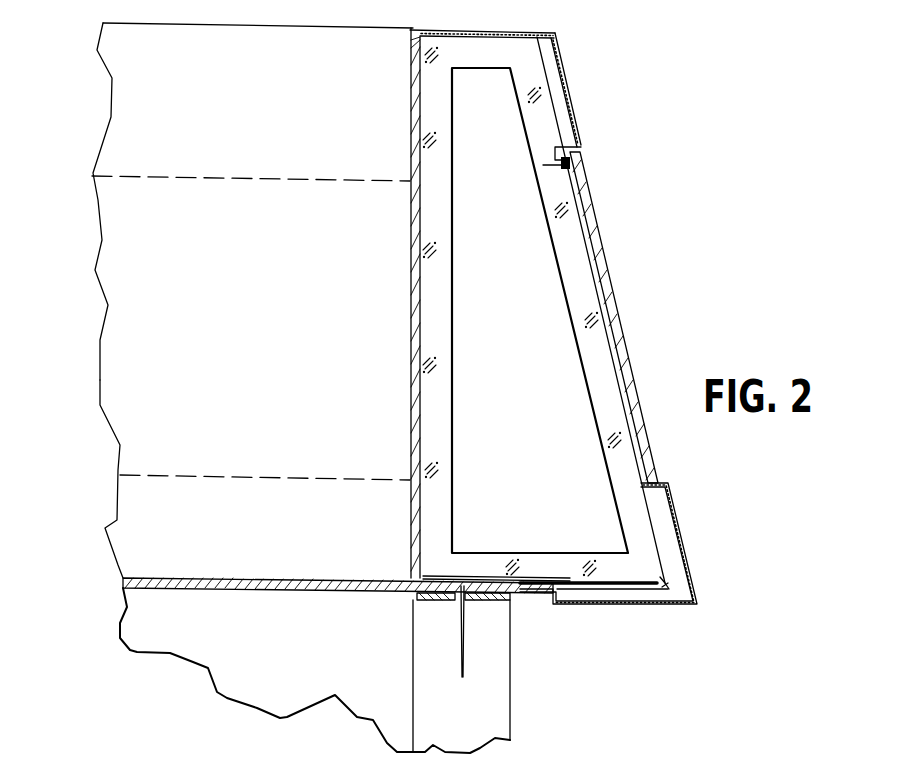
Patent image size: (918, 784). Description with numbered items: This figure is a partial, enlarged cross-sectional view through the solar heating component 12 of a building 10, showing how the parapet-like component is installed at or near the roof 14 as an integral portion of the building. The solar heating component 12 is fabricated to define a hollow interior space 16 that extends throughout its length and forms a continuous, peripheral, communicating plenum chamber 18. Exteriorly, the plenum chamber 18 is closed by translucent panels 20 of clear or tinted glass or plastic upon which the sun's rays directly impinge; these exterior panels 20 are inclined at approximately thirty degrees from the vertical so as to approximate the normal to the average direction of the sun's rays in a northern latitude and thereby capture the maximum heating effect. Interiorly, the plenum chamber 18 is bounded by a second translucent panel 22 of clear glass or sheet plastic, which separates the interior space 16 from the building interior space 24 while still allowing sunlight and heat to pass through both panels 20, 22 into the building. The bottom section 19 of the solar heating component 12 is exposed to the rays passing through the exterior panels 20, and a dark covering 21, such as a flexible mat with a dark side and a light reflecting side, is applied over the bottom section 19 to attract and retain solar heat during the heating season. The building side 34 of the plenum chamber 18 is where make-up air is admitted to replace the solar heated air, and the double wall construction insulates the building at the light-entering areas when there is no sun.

The building 10 is at (127, 623).
The solar heating component 12 is at (518, 27).
The roof 14 is at (122, 118).
The interior space 16 is at (517, 378).
The plenum chamber 18 is at (598, 537).
The bottom section 19 is at (668, 582).
The translucent panels 20 is at (612, 298).
The dark covering 21 is at (572, 580).
The second translucent panel 22 is at (410, 335).
The building interior space 24 is at (123, 442).
The building side 34 is at (408, 538).